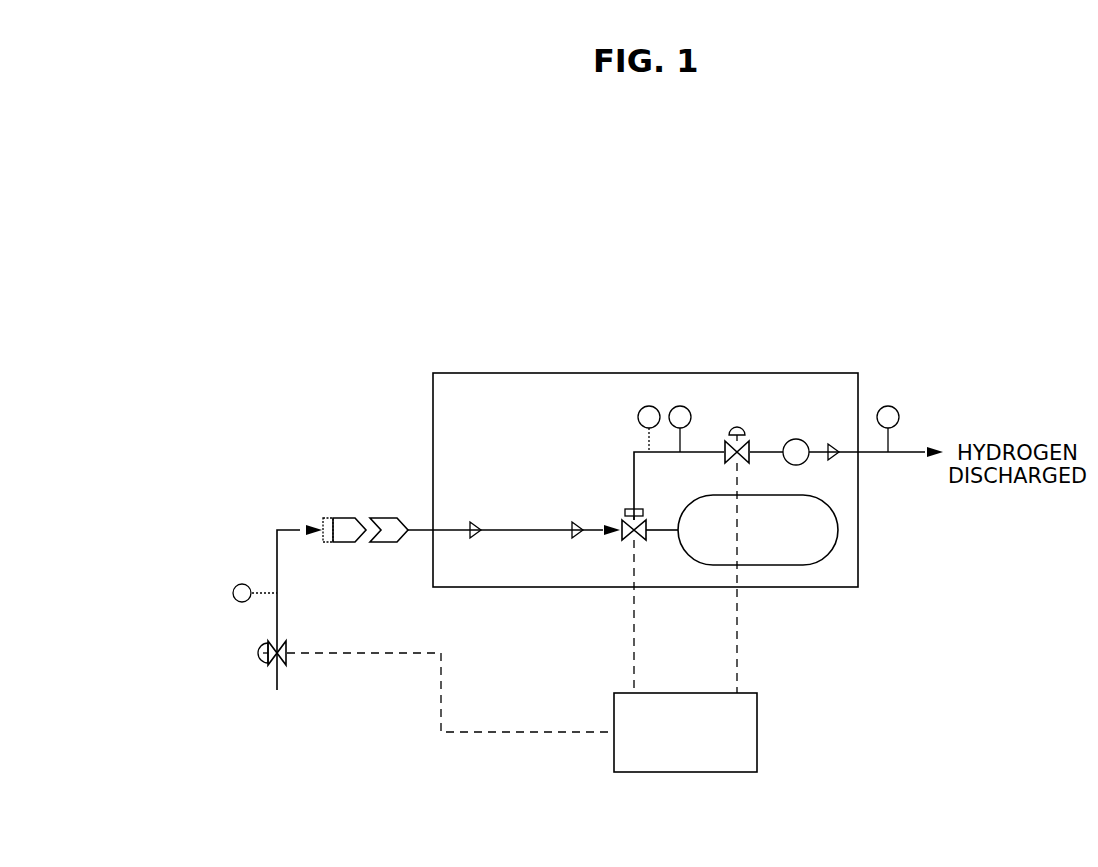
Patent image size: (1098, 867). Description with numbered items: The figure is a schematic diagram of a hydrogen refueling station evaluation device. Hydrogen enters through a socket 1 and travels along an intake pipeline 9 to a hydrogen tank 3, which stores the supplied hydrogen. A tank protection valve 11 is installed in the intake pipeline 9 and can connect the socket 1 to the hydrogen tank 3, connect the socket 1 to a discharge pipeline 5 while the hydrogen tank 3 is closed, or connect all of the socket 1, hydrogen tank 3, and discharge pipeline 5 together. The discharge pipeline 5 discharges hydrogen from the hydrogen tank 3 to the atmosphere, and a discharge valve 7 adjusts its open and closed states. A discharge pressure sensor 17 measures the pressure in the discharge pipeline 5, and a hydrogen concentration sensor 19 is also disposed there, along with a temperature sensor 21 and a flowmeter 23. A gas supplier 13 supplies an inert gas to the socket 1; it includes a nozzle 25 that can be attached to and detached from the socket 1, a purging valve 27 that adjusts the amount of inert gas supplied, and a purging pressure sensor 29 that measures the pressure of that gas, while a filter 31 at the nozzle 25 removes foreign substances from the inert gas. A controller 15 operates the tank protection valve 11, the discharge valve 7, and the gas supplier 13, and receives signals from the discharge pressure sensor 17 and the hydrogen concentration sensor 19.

The socket 1 is at (398, 521).
The hydrogen tank 3 is at (795, 566).
The discharge pipeline 5 is at (768, 450).
The discharge valve 7 is at (738, 427).
The intake pipeline 9 is at (528, 533).
The tank protection valve 11 is at (621, 545).
The gas supplier 13 is at (271, 441).
The controller 15 is at (758, 737).
The discharge pressure sensor 17 is at (680, 406).
The hydrogen concentration sensor 19 is at (888, 406).
The temperature sensor 21 is at (649, 406).
The flowmeter 23 is at (804, 464).
The nozzle 25 is at (343, 521).
The purging valve 27 is at (255, 653).
The purging pressure sensor 29 is at (238, 585).
The filter 31 is at (323, 518).